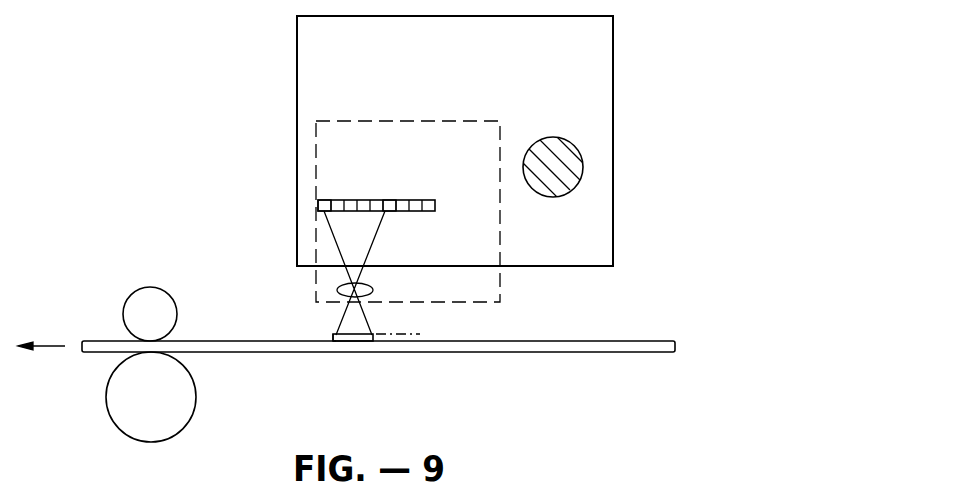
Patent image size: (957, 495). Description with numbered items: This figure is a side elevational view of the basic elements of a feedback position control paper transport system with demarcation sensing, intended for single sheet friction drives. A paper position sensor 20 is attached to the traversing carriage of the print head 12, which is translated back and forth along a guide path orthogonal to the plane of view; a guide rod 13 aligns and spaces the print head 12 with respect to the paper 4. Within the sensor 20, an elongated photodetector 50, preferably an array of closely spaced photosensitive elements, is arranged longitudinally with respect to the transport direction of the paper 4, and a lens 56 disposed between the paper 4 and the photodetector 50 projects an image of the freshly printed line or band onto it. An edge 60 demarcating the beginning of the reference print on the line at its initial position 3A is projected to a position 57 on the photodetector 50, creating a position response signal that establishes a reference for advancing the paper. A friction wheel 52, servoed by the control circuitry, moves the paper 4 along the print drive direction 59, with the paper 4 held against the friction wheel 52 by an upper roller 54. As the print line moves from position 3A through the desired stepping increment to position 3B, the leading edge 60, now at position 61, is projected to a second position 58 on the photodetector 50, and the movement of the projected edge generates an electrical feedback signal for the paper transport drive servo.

The print head 12 is at (613, 66).
The guide rod 13 is at (581, 172).
The paper position sensor 20 is at (500, 237).
The photodetector 50 is at (428, 198).
The position on photosensor 57 is at (330, 198).
The second position on photosensor 58 is at (394, 198).
The lens 56 is at (337, 291).
The edge 60 is at (375, 334).
The initial position of print line 3A is at (420, 334).
The stepped position of print line 3B is at (336, 335).
The position of leading edge after step 61 is at (336, 337).
The paper 4 is at (500, 354).
The pinch roller 54 is at (147, 290).
The friction wheel 52 is at (180, 427).
The print drive direction 59 is at (50, 340).